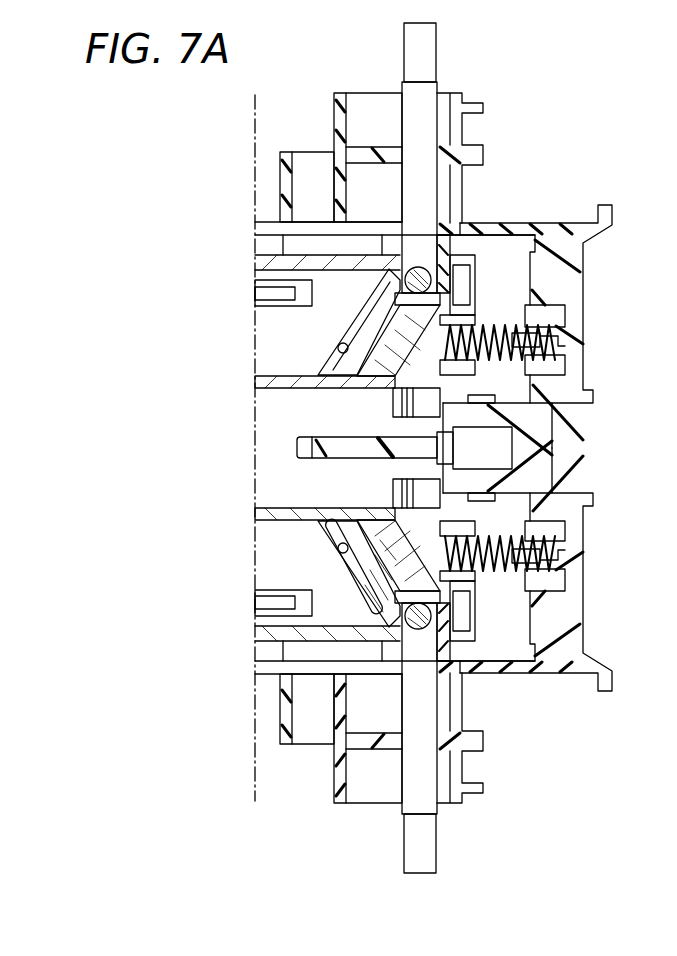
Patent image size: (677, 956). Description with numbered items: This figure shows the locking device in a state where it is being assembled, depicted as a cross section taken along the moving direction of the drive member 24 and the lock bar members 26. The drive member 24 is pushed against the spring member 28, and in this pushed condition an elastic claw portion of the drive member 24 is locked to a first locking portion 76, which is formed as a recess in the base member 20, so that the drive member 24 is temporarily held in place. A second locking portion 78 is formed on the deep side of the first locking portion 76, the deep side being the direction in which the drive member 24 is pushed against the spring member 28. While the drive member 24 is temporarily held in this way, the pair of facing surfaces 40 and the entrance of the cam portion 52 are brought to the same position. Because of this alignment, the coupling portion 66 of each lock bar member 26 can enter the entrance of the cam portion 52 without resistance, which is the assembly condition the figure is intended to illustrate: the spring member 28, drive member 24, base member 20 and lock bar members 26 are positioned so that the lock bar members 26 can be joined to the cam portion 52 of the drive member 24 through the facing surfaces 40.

The base member 20 is at (309, 212).
The drive member 24 is at (278, 383).
The lock bar member 26 is at (426, 100).
The spring member 28 is at (497, 325).
The facing surfaces 40 is at (402, 108).
The cam portion 52 is at (347, 352).
The coupling portion 66 is at (420, 266).
The first locking portion 76 is at (395, 458).
The second locking portion 78 is at (416, 441).